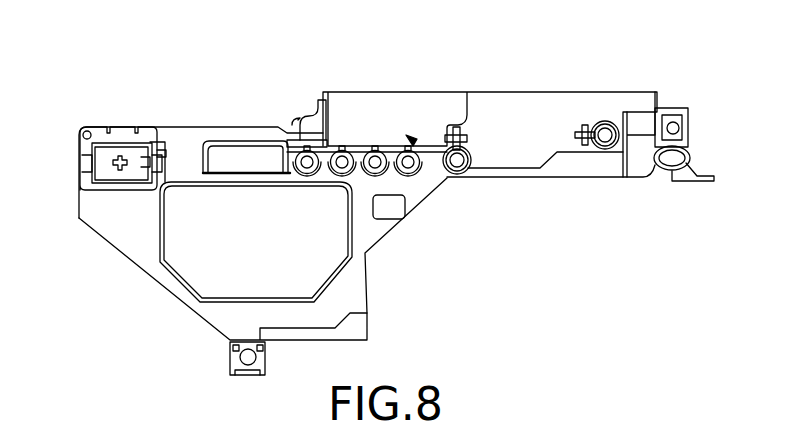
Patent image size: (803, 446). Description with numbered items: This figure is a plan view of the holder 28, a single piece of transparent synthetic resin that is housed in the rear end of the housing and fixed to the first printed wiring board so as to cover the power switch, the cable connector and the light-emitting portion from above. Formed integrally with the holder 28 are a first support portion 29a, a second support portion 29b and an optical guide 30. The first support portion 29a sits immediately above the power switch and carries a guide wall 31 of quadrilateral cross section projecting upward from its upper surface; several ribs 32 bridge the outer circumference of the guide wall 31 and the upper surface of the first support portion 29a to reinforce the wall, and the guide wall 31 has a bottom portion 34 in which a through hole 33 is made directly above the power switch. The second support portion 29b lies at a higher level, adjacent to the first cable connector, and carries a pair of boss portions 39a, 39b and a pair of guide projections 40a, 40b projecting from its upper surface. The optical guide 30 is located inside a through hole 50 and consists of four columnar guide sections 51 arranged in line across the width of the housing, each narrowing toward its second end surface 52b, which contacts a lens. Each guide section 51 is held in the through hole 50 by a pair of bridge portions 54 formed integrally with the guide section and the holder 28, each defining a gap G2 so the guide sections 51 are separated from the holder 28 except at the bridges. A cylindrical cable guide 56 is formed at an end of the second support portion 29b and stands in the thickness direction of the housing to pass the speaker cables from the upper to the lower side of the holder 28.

The holder 28 is at (214, 343).
The first support portion 29a is at (132, 213).
The second support portion 29b is at (533, 160).
The optical guide 30 is at (405, 152).
The guide wall 31 is at (152, 130).
The ribs 32 is at (82, 160).
The through hole 33 is at (122, 154).
The bottom portion 34 is at (107, 175).
The boss portion 39a is at (457, 162).
The boss portion 39b is at (605, 137).
The guide projection 40a is at (468, 130).
The guide projection 40b is at (587, 126).
The through hole 50 is at (295, 165).
The guide sections 51 is at (338, 156).
The second end surface 52b is at (342, 150).
The bridge portions 54 is at (380, 151).
The cable guide 56 is at (690, 156).
The gap G2 is at (412, 143).